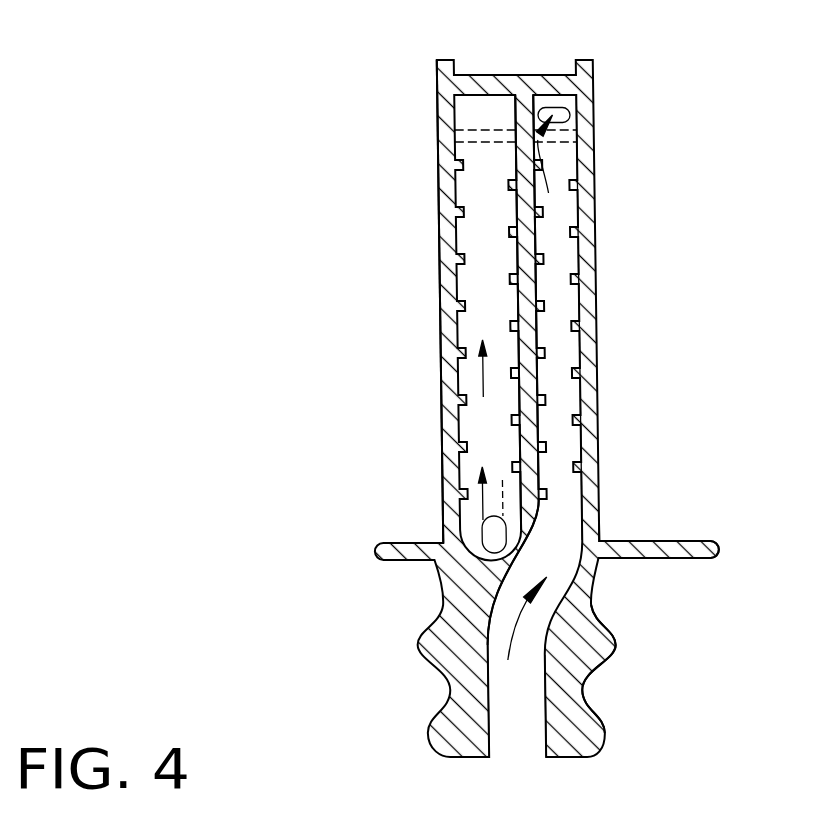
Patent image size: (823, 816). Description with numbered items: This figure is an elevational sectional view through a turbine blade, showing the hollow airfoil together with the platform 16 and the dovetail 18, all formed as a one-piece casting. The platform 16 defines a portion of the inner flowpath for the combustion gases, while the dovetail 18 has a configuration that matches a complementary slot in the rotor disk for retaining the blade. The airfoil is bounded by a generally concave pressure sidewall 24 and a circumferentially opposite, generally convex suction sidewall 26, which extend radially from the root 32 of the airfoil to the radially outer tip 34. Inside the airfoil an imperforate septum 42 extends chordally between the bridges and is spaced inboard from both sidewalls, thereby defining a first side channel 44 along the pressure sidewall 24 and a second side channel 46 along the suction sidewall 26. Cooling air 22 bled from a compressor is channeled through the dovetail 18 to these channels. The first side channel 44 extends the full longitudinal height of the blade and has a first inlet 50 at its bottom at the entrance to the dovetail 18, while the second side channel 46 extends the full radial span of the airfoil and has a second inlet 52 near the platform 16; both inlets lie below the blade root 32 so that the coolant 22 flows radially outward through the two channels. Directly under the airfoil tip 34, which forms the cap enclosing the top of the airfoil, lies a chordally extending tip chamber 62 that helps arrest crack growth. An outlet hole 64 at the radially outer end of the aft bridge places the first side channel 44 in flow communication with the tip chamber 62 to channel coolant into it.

The platform 16 is at (692, 541).
The dovetail 18 is at (613, 640).
The air 22 is at (486, 630).
The pressure sidewall 24 is at (596, 305).
The suction sidewall 26 is at (440, 307).
The root 32 is at (596, 540).
The airfoil tip 34 is at (590, 60).
The septum 42 is at (536, 242).
The first side channel 44 is at (554, 400).
The second side channel 46 is at (477, 429).
The first inlet 50 is at (525, 736).
The second inlet 52 is at (481, 545).
The tip chamber 62 is at (478, 116).
The outlet hole 64 is at (572, 115).